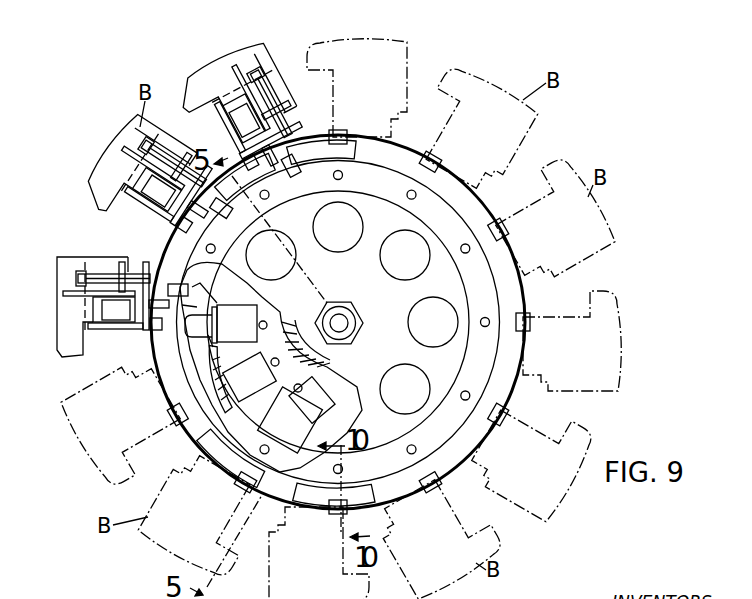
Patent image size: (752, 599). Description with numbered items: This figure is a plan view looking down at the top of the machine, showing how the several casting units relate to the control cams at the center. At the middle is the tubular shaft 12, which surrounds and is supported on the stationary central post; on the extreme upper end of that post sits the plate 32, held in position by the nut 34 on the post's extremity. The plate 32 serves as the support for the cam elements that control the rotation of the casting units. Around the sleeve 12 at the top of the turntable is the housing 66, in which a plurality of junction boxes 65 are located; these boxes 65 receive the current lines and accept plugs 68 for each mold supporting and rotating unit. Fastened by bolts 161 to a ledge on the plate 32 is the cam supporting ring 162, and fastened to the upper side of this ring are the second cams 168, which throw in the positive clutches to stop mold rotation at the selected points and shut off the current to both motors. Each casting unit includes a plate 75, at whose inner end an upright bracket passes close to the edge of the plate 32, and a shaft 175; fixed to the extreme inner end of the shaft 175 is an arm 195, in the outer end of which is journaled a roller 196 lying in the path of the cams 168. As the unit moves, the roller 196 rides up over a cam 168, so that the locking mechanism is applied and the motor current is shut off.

The tubular shaft 12 is at (333, 372).
The plate 32 is at (453, 289).
The nut 34 is at (374, 317).
The junction boxes 65 is at (257, 305).
The housing 66 is at (147, 393).
The plugs 68 is at (214, 345).
The plate 75 is at (97, 195).
The bolts 161 is at (340, 174).
The cam supporting ring 162 is at (487, 350).
The second cams 168 is at (262, 198).
The shaft 175 is at (267, 105).
The arm 195 is at (200, 222).
The roller 196 is at (212, 246).